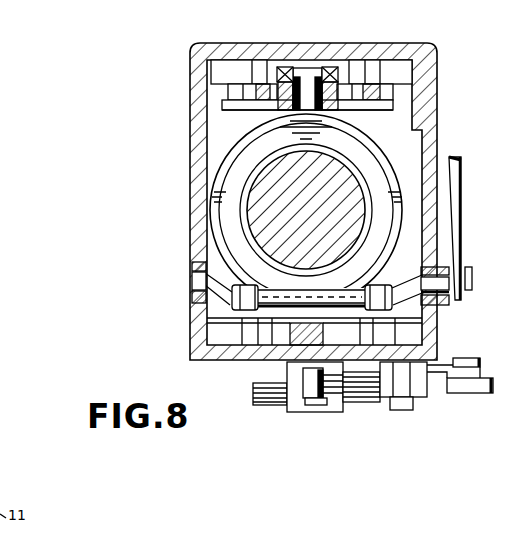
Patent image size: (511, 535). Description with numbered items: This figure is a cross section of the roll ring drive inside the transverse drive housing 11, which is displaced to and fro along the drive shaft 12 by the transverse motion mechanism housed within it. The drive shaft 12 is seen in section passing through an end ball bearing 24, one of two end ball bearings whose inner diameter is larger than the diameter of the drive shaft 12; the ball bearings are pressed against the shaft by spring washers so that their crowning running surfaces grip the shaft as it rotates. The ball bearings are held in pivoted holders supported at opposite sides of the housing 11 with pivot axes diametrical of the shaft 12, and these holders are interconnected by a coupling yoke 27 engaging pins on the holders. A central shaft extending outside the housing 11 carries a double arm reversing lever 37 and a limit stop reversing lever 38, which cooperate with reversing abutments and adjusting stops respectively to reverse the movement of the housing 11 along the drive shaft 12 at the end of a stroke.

The transverse drive housing 11 is at (200, 112).
The drive shaft 12 is at (262, 208).
The end ball bearing 24 is at (235, 237).
The coupling yoke 27 is at (393, 88).
The double arm reversing lever 37 is at (315, 385).
The limit stop reversing lever 38 is at (477, 385).